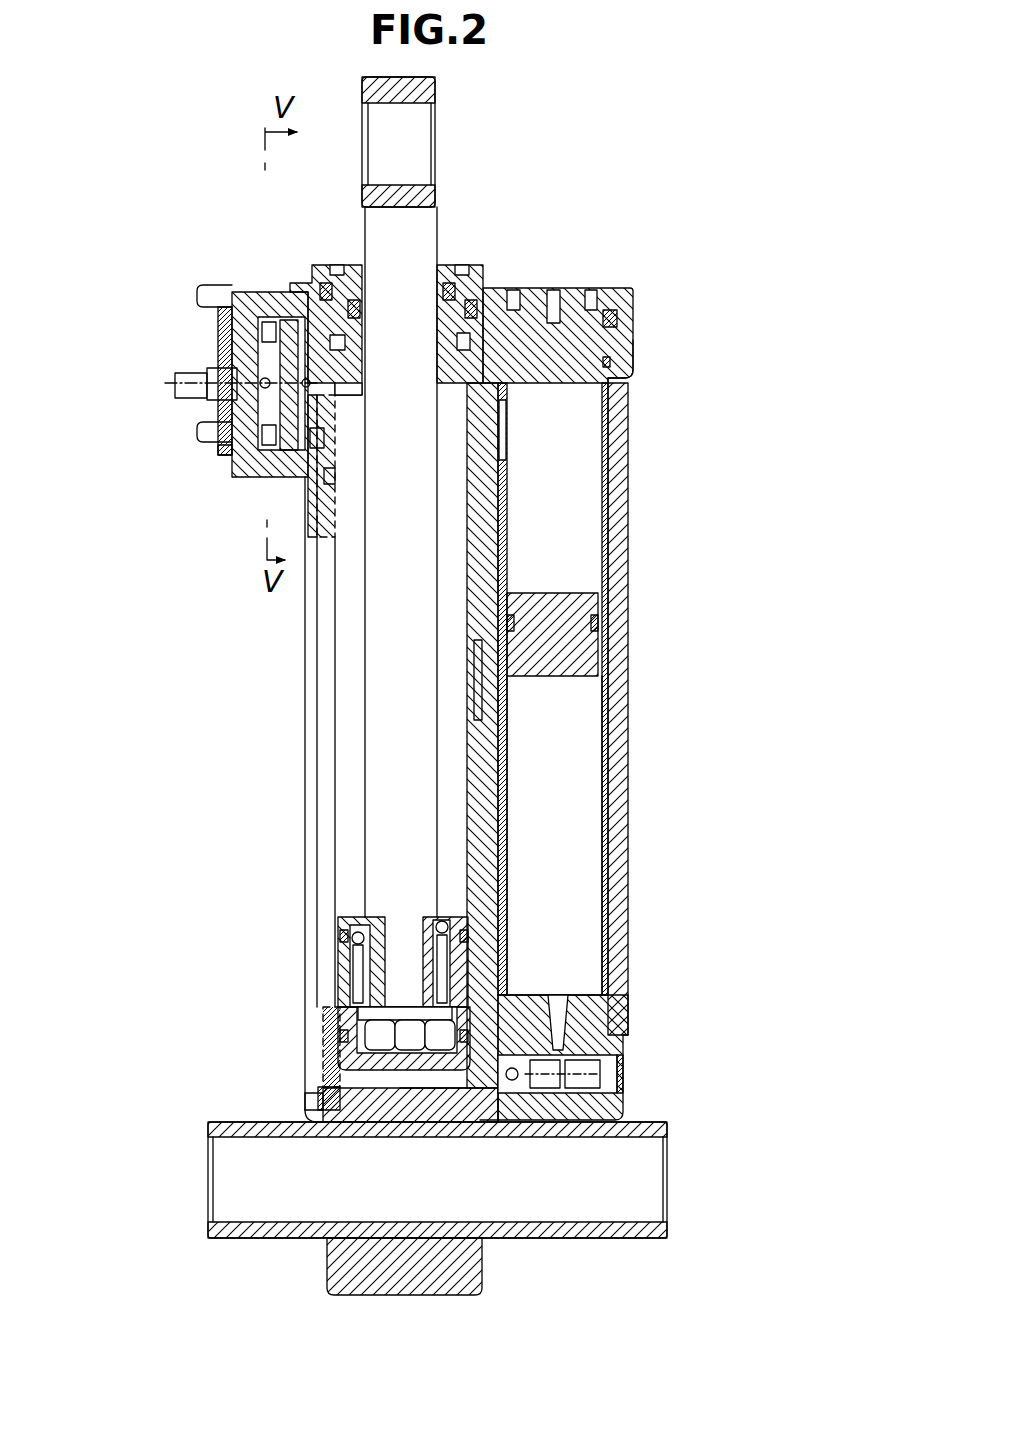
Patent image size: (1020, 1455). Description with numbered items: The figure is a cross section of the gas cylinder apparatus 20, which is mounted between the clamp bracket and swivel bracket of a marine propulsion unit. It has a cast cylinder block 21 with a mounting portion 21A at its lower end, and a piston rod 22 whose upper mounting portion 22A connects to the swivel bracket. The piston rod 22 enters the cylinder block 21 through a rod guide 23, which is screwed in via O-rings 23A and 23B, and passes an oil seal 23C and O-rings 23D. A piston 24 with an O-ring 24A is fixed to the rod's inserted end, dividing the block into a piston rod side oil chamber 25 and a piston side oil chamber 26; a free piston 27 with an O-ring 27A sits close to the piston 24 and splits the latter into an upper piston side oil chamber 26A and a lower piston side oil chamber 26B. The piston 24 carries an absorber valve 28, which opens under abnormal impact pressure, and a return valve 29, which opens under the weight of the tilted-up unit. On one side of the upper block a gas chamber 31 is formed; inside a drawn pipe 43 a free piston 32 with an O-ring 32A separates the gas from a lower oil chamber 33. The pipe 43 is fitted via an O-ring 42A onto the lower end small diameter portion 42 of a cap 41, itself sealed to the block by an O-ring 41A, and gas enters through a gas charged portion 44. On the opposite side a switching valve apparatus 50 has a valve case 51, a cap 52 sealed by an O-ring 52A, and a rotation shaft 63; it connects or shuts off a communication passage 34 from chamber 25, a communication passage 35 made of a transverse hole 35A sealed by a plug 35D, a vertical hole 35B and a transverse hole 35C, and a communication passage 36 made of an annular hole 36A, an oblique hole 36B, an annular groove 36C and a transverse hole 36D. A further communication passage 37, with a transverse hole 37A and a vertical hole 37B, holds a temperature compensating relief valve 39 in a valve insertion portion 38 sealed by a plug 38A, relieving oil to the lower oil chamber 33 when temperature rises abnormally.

The gas cylinder apparatus 20 is at (463, 711).
The cylinder block 21 is at (301, 841).
The mounting portion 21A is at (268, 1232).
The piston rod 22 is at (425, 232).
The mounting portion 22A is at (428, 93).
The rod guide 23 is at (403, 305).
The O-ring 23A is at (318, 283).
The O-ring 23B is at (356, 389).
The oil seal 23C is at (342, 270).
The O-rings 23D is at (354, 302).
The piston 24 is at (382, 1076).
The O-ring 24A is at (343, 931).
The piston rod side oil chamber 25 is at (348, 613).
The piston side oil chamber 26 is at (406, 1203).
The upper piston side oil chamber 26A is at (448, 1060).
The lower piston side oil chamber 26B is at (423, 1090).
The free piston 27 is at (453, 1066).
The O-ring 27A is at (340, 1020).
The absorber valve 28 is at (352, 938).
The return valve 29 is at (441, 921).
The gas chamber 31 is at (648, 709).
The free piston 32 is at (614, 634).
The O-ring 32A is at (602, 626).
The lower oil chamber 33 is at (590, 866).
The communication passage 34 is at (341, 441).
The communication passage 35 is at (337, 506).
The transverse hole 35A is at (305, 1115).
The vertical hole 35B is at (323, 1030).
The transverse hole 35C is at (331, 471).
The plug 35D is at (320, 1092).
The communication passage 36 is at (474, 735).
The annular hole 36A is at (490, 712).
The oblique hole 36B is at (506, 430).
The annular groove 36C is at (503, 540).
The transverse hole 36D is at (346, 342).
The communication passage 37 is at (618, 1147).
The transverse hole 37A is at (488, 1080).
The vertical hole 37B is at (560, 1032).
The valve insertion portion 38 is at (582, 1070).
The plug 38A is at (625, 1080).
The temperature compensating relief valve 39 is at (514, 1070).
The cap 41 is at (603, 301).
The O-ring 41A is at (615, 318).
The lower end small diameter portion 42 is at (633, 372).
The O-ring 42A is at (611, 362).
The pipe 43 is at (607, 526).
The gas charged portion 44 is at (555, 295).
The switching valve apparatus 50 is at (209, 371).
The valve case 51 is at (270, 292).
The cap 52 is at (226, 450).
The O-ring 52A is at (226, 468).
The rotation shaft 63 is at (176, 384).